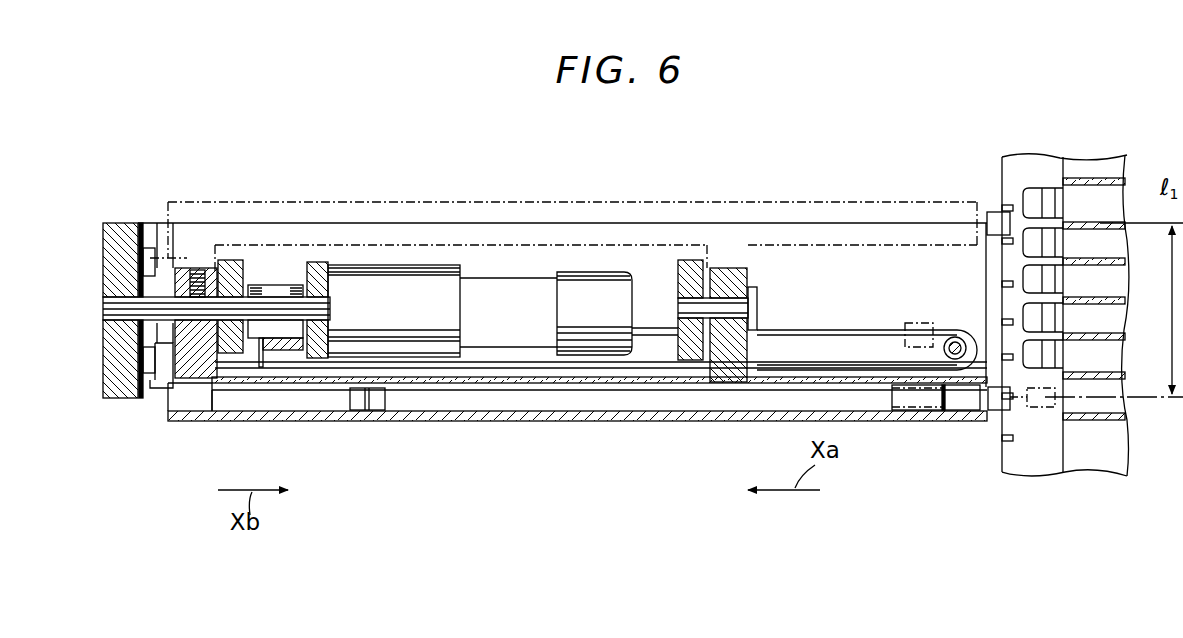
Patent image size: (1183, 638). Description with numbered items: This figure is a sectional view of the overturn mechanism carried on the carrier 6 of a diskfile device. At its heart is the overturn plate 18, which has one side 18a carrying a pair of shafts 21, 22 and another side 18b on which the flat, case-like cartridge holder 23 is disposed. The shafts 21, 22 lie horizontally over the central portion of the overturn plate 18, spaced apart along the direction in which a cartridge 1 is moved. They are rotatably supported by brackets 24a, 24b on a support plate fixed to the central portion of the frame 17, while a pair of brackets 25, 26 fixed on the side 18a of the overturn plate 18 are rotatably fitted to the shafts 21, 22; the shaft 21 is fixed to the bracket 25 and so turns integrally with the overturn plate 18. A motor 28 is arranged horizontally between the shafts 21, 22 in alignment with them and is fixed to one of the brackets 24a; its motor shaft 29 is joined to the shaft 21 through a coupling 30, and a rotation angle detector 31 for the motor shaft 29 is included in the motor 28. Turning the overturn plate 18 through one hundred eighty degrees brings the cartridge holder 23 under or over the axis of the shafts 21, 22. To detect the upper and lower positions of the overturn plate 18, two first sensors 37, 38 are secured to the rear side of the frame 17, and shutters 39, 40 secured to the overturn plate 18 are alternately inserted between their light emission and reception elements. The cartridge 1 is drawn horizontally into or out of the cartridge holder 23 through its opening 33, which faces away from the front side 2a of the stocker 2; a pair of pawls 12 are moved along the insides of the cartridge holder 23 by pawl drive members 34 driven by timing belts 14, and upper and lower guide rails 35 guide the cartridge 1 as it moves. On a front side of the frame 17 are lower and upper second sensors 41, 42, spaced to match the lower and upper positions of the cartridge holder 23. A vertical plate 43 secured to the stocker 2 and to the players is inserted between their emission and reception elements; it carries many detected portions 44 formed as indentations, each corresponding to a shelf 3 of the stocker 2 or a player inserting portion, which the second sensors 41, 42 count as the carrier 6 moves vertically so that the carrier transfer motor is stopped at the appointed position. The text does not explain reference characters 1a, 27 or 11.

The carrier 6 is at (181, 106).
The overturn plate 18 is at (800, 212).
The one side of the overturn plate 18a is at (505, 354).
The other side of the overturn plate 18b is at (481, 431).
The cartridge holder 23 is at (647, 408).
The cartridge 1 is at (577, 402).
The base plate projection 1a is at (352, 400).
The pawls 12 is at (377, 404).
The guide rails 35 is at (325, 388).
The frame 17 is at (120, 235).
The first sensor 38 is at (143, 224).
The shutter 40 is at (158, 240).
The first sensor 37 is at (146, 358).
The shutter 39 is at (160, 378).
The shaft 21 is at (133, 300).
The adjusting screw 27 is at (185, 262).
The bracket 25 is at (197, 270).
The brackets 24a is at (232, 268).
The coupling 30 is at (275, 290).
The motor shaft 29 is at (332, 272).
The motor 28 is at (422, 280).
The rotation angle detector 31 is at (595, 290).
The brackets 24b is at (690, 270).
The bracket 26 is at (735, 272).
The shaft 22 is at (742, 306).
The timing belts 14 is at (815, 332).
The pawl drive members 34 is at (890, 345).
The opening 33 is at (957, 402).
The second sensor 41 is at (992, 412).
The second sensor 42 is at (992, 212).
The vertical plate 43 is at (1020, 165).
The detected portions 44 is at (1000, 321).
The holding fingers 11 is at (1040, 215).
The shelves 3 is at (1100, 355).
The stocker 2 is at (1092, 465).
The front side of the stocker 2a is at (1017, 445).